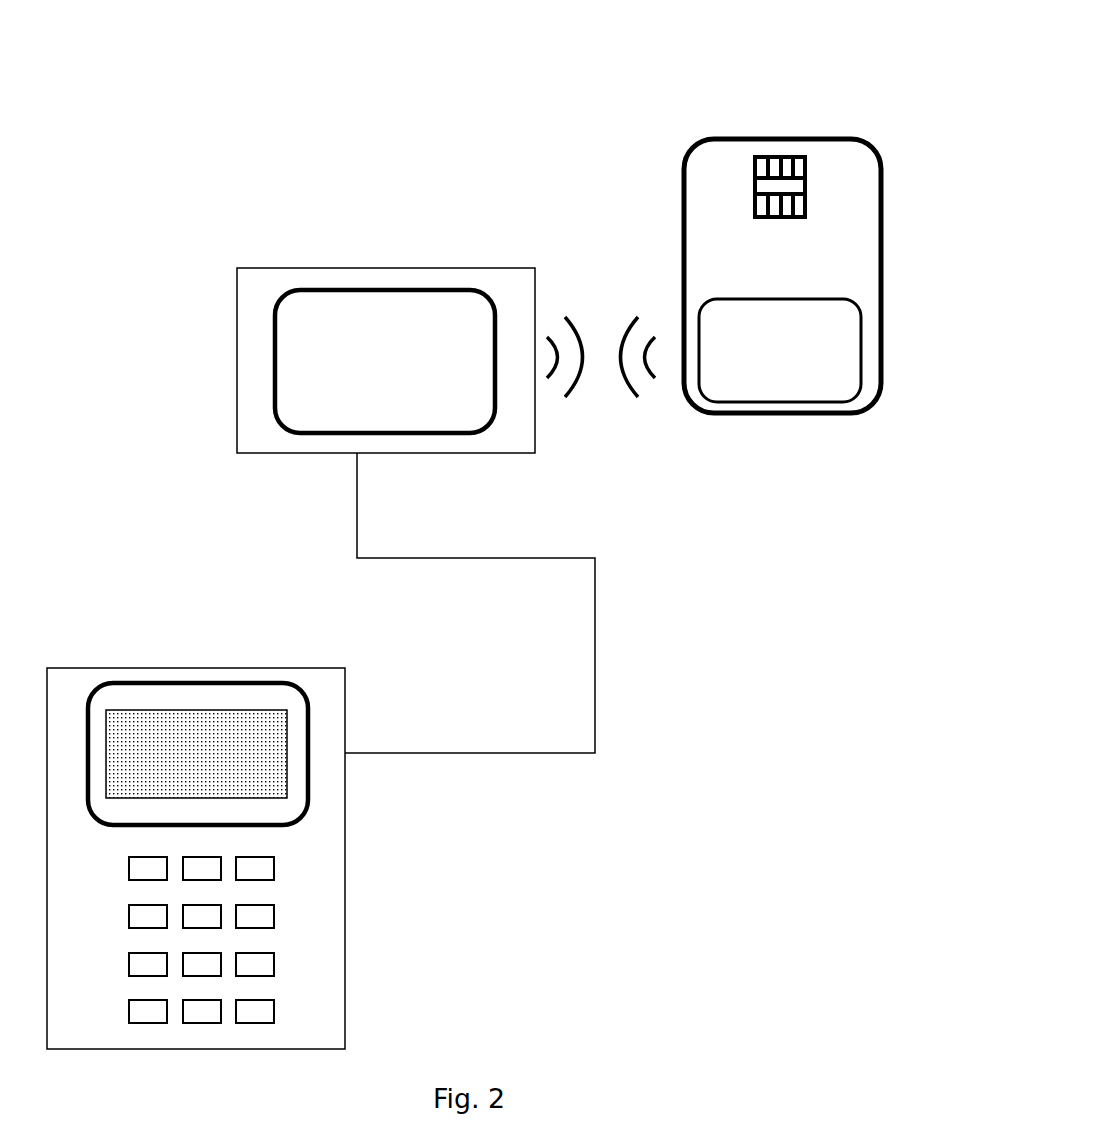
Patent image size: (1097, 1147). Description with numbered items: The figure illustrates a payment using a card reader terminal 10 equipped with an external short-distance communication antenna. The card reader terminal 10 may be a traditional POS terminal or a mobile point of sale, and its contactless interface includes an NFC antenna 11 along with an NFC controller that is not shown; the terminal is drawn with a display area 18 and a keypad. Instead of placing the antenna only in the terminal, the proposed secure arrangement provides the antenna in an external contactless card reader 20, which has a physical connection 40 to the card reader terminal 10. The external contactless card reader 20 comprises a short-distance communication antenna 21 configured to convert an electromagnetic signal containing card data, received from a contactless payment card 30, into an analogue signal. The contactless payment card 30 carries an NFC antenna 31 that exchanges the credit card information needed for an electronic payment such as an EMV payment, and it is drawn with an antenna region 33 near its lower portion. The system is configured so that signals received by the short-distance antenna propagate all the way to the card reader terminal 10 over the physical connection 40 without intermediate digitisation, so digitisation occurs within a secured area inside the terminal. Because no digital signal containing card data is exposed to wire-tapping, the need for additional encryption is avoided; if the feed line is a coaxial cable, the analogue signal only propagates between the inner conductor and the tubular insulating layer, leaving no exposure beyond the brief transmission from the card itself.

The card reader terminal 10 is at (121, 635).
The NFC antenna 11 is at (314, 781).
The display screen 18 is at (256, 711).
The external contactless card reader 20 is at (382, 240).
The short-distance communication antenna 21 is at (435, 287).
The contactless payment card 30 is at (835, 116).
The NFC antenna 31 is at (810, 182).
The card antenna area 33 is at (847, 385).
The physical connection 40 is at (600, 654).